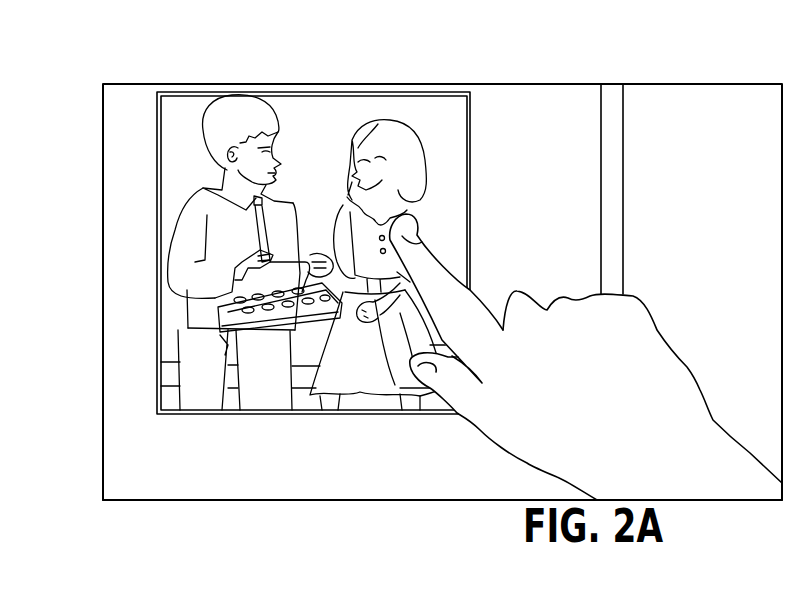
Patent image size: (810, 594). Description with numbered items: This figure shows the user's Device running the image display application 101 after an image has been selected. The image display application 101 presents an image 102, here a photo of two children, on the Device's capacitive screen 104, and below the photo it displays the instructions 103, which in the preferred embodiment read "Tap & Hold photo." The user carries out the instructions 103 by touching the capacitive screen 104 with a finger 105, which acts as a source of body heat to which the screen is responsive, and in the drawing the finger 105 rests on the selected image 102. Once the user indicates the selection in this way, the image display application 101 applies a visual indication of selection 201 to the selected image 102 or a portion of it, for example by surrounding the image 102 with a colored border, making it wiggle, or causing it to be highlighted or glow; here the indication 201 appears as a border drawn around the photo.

The image display application 101 is at (102, 188).
The image 102 is at (259, 231).
The instructions 103 is at (285, 500).
The capacitive screen 104 is at (408, 127).
The user's finger 105 is at (415, 245).
The visual indication of selection 201 is at (392, 92).